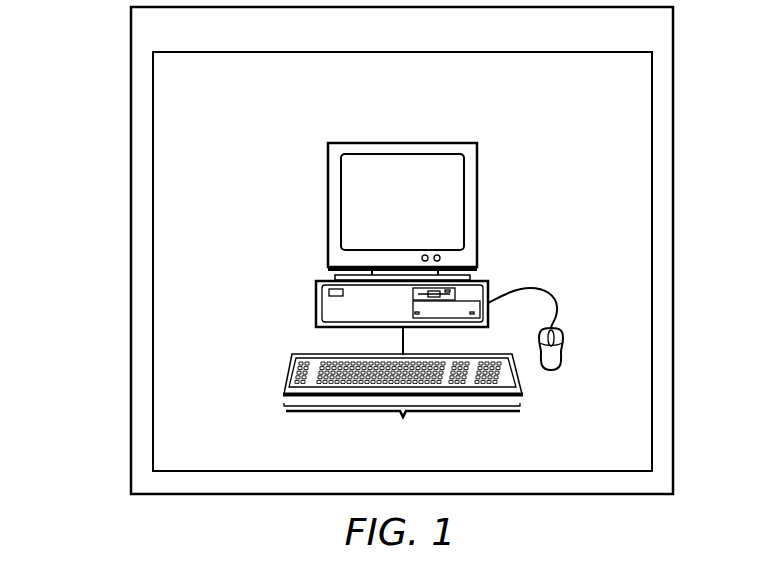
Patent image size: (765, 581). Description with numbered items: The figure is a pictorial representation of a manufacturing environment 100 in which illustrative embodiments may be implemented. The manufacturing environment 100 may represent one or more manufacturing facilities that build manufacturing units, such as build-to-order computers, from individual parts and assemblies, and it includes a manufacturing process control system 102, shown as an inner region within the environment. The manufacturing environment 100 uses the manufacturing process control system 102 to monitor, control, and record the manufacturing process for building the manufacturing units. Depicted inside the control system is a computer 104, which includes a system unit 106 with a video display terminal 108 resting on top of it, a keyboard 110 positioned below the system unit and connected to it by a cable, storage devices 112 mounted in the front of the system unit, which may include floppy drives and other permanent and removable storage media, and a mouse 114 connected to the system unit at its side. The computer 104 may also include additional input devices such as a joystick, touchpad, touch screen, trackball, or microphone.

The manufacturing environment 100 is at (90, 228).
The manufacturing process control system 102 is at (262, 199).
The computer 104 is at (402, 427).
The system unit 106 is at (316, 303).
The video display terminal 108 is at (477, 205).
The keyboard 110 is at (290, 370).
The storage devices 112 is at (462, 293).
The mouse 114 is at (563, 352).